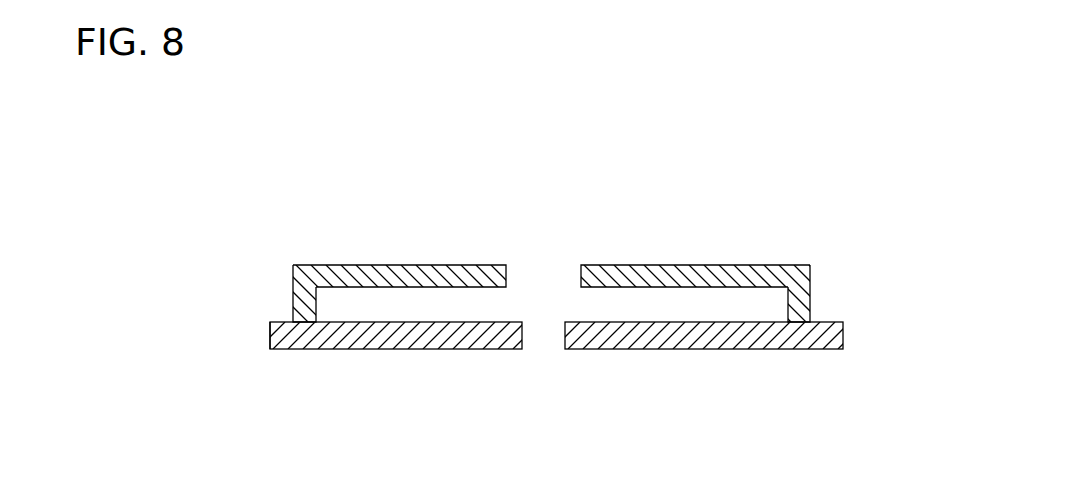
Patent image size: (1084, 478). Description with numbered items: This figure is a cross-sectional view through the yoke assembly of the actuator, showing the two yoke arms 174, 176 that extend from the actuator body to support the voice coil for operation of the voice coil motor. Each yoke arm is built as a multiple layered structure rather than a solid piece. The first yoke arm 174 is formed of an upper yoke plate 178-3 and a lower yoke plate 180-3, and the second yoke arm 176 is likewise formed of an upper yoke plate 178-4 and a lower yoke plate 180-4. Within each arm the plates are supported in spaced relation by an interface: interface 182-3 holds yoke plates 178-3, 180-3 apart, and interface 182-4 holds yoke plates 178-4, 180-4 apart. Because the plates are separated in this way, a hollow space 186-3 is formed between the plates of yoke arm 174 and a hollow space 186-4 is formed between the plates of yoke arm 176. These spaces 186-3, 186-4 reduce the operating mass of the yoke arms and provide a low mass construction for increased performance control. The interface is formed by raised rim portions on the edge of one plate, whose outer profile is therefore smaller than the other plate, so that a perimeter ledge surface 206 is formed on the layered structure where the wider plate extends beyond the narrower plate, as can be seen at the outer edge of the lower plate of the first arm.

The yoke arm 174 is at (420, 215).
The yoke arm 176 is at (684, 215).
The yoke plate 178-3 is at (323, 265).
The yoke plate 178-4 is at (597, 265).
The yoke plate 180-3 is at (345, 340).
The yoke plate 180-4 is at (600, 348).
The interface 182-3 is at (293, 300).
The interface 182-4 is at (810, 295).
The space 186-3 is at (455, 307).
The space 186-4 is at (692, 305).
The perimeter ledge surface 206 is at (278, 322).